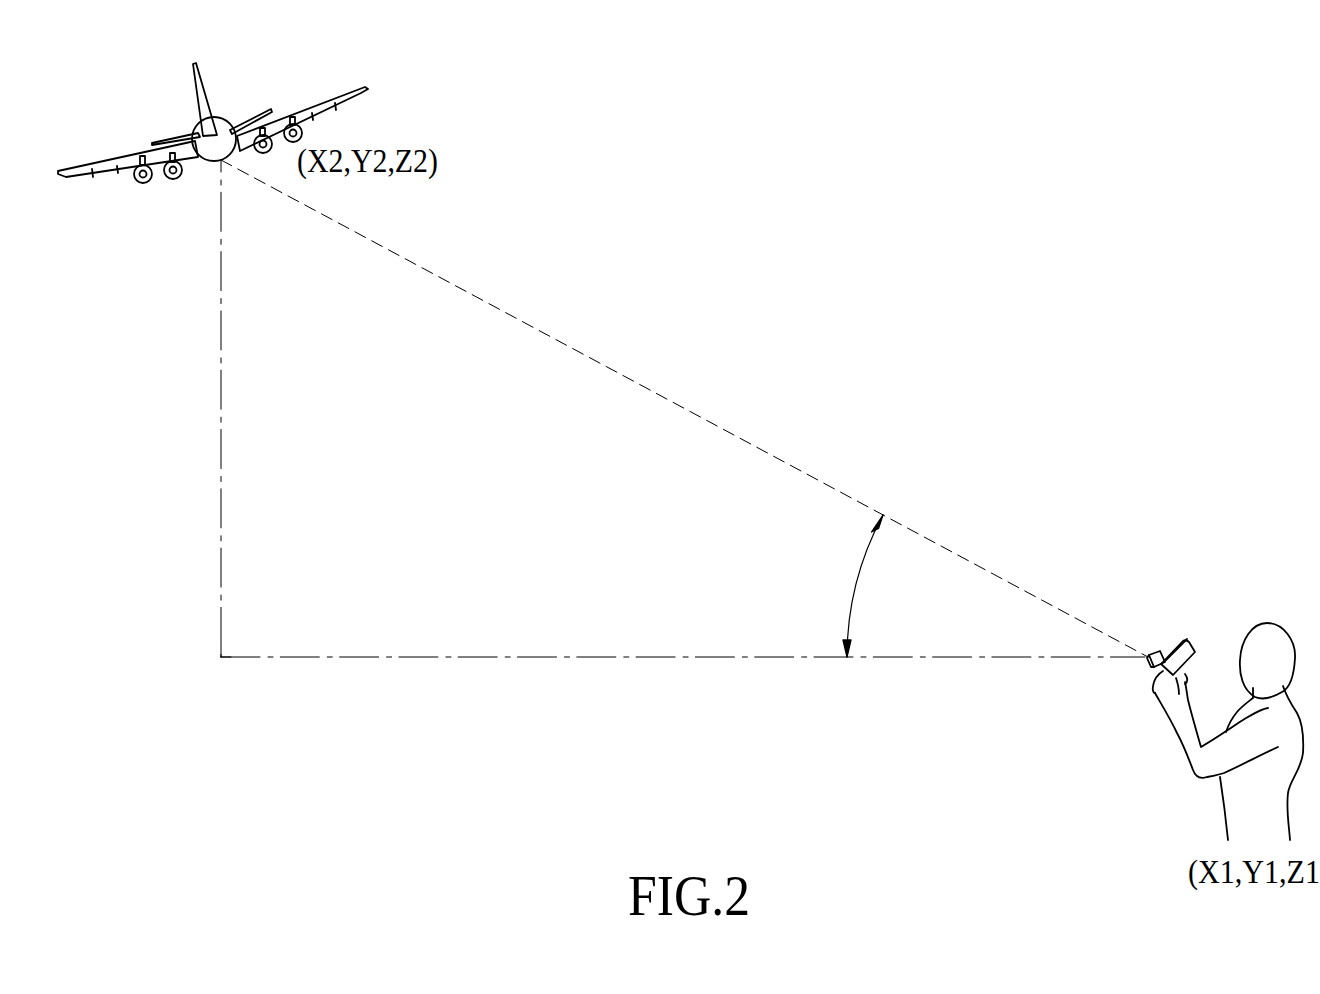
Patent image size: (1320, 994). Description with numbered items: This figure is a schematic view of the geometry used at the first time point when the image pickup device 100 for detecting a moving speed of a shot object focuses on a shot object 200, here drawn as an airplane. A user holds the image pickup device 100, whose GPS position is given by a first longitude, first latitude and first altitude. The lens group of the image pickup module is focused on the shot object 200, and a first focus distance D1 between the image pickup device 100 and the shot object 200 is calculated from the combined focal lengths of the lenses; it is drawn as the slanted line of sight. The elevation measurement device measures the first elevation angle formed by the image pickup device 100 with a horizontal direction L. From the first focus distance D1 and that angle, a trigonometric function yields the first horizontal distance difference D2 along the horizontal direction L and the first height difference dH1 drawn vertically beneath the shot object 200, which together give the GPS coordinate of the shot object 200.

The image pickup device for detecting a moving speed of a shot object 100 is at (1185, 640).
The shot object 200 is at (221, 124).
The first focus distance D1 is at (684, 408).
The first horizontal distance difference D2 is at (683, 681).
The first height difference dH1 is at (194, 408).
The horizontal direction L is at (211, 669).